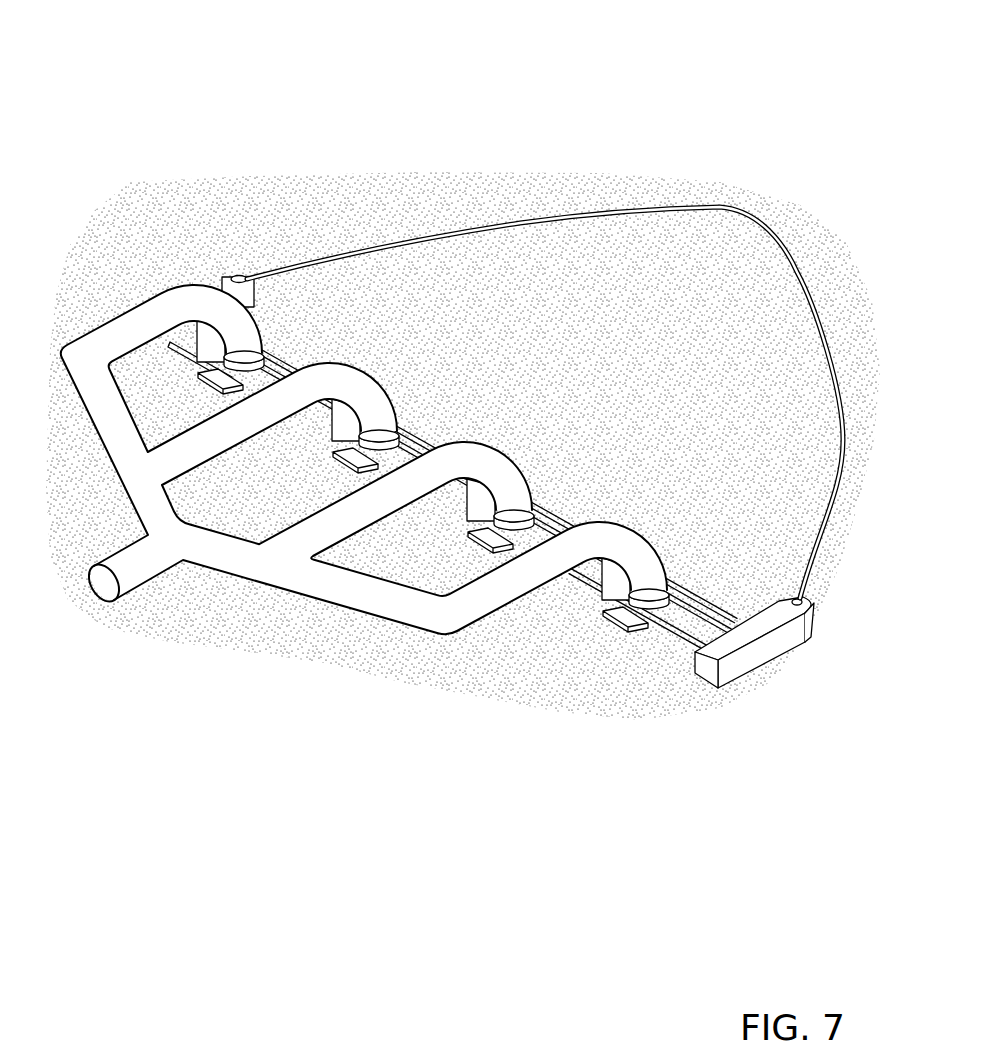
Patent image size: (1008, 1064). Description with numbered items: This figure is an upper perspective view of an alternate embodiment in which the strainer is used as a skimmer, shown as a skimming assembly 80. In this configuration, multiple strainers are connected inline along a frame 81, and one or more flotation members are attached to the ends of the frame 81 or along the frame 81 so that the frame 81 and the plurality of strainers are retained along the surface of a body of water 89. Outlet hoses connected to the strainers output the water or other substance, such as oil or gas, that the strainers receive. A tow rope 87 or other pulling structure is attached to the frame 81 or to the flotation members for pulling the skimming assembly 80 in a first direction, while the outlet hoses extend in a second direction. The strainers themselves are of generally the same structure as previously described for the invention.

The skimming assembly 80 is at (452, 448).
The frame 81 is at (682, 632).
The tow rope 87 is at (568, 217).
The body of water 89 is at (265, 223).